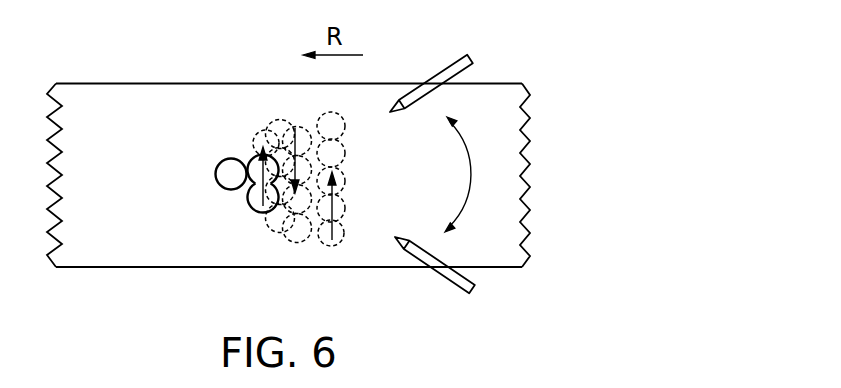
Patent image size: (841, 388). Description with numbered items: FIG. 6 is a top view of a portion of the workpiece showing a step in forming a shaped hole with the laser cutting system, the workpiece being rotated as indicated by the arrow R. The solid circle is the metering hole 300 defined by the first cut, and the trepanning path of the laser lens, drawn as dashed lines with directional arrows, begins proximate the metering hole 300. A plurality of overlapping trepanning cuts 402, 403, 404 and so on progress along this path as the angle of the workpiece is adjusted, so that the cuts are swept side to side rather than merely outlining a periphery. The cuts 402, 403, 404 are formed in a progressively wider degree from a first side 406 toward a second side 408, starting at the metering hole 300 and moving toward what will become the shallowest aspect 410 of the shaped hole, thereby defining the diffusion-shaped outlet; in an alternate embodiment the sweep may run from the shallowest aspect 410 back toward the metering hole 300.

The metering hole 300 is at (215, 178).
The trepanning cut 402 is at (263, 216).
The trepanning cut 403 is at (250, 154).
The trepanning cut 404 is at (258, 137).
The first side 406 is at (294, 240).
The second side 408 is at (254, 136).
The shallowest aspect 410 is at (348, 172).